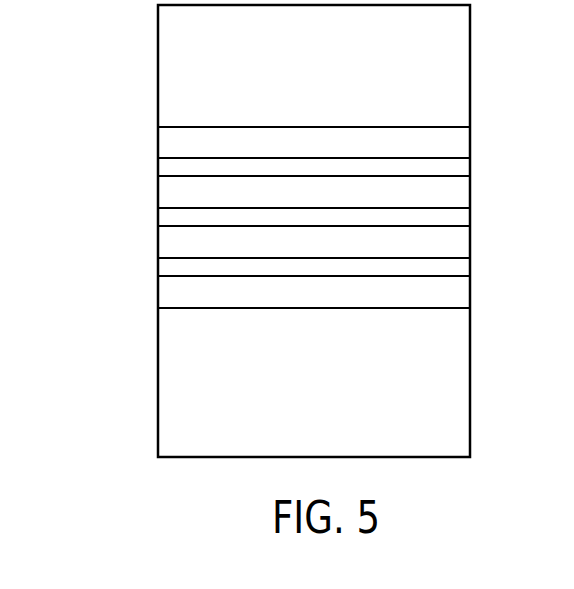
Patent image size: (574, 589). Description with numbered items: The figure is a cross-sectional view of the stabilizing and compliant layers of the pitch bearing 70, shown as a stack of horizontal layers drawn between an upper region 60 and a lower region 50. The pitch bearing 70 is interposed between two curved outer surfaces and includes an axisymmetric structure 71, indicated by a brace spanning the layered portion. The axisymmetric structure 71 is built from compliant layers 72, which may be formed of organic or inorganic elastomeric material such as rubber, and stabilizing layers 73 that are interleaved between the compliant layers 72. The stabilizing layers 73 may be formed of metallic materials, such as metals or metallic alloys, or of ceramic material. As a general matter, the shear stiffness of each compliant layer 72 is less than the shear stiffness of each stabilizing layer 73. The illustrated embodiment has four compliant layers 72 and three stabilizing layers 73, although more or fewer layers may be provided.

The substrate / bottom layer 50 is at (170, 359).
The top layer 60 is at (170, 42).
The pitch bearing 70 is at (158, 214).
The axisymmetric structure 71 is at (115, 310).
The compliant layers 72 is at (458, 140).
The stabilizing layers 73 is at (458, 167).